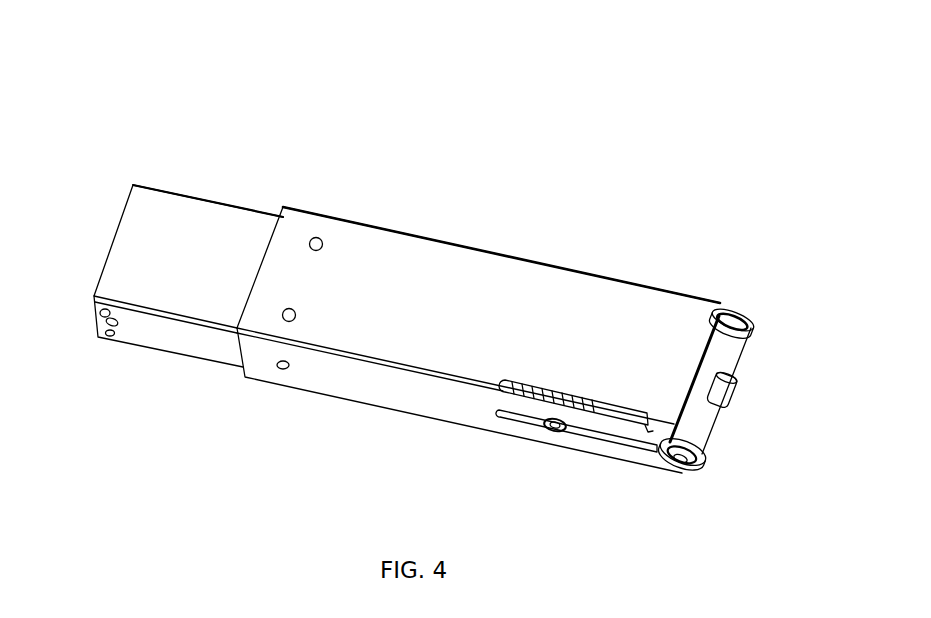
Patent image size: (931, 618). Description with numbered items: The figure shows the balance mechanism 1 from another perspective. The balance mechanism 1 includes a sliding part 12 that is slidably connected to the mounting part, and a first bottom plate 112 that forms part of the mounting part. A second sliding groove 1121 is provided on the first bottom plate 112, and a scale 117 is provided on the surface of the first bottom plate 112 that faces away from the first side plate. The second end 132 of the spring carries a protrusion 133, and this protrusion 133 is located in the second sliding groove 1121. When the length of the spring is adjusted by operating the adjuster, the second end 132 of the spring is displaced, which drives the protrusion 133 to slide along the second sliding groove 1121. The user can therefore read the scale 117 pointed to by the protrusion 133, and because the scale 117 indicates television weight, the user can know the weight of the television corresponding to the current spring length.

The balance mechanism 1 is at (133, 68).
The sliding part 12 is at (217, 248).
The first bottom plate 112 is at (503, 317).
The second sliding groove 1121 is at (638, 400).
The scale 117 is at (650, 398).
The second end of the spring 132 is at (553, 432).
The protrusion 133 is at (567, 408).